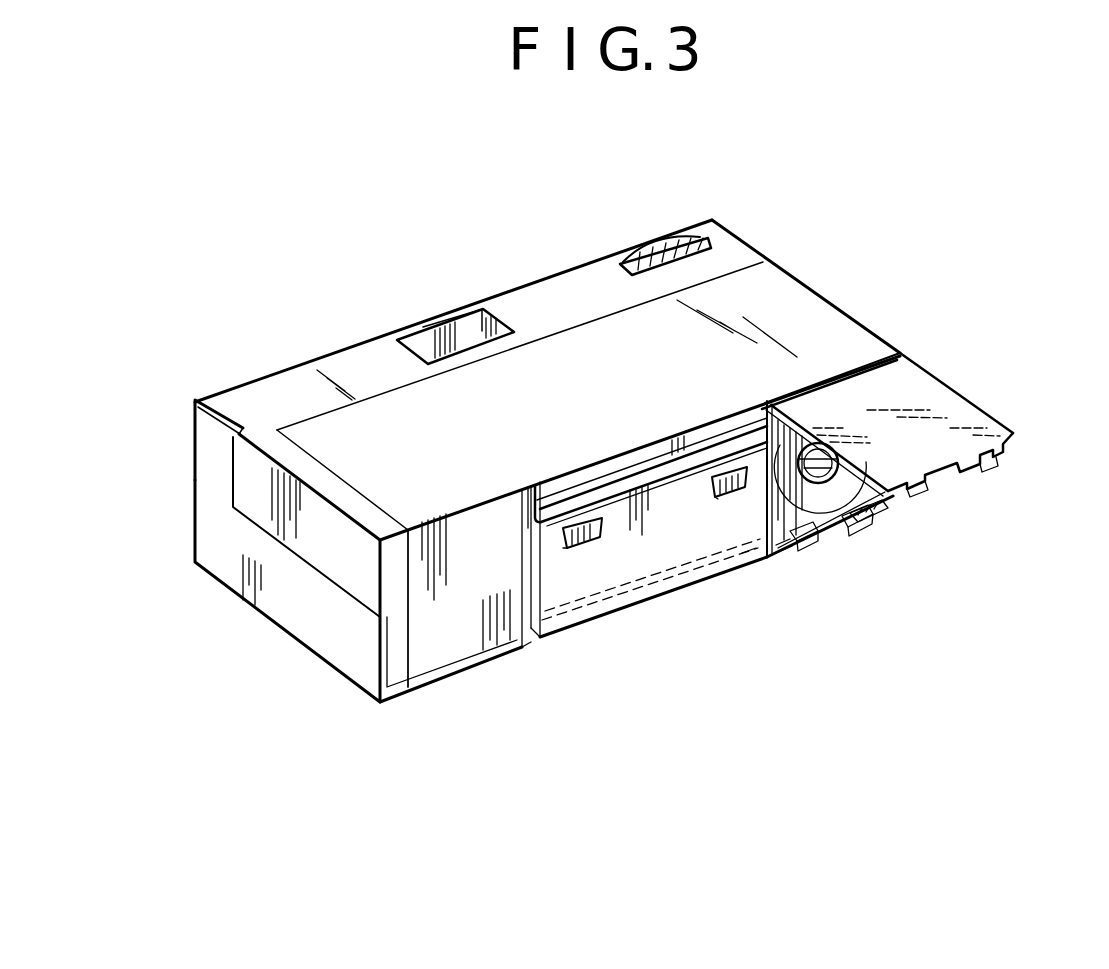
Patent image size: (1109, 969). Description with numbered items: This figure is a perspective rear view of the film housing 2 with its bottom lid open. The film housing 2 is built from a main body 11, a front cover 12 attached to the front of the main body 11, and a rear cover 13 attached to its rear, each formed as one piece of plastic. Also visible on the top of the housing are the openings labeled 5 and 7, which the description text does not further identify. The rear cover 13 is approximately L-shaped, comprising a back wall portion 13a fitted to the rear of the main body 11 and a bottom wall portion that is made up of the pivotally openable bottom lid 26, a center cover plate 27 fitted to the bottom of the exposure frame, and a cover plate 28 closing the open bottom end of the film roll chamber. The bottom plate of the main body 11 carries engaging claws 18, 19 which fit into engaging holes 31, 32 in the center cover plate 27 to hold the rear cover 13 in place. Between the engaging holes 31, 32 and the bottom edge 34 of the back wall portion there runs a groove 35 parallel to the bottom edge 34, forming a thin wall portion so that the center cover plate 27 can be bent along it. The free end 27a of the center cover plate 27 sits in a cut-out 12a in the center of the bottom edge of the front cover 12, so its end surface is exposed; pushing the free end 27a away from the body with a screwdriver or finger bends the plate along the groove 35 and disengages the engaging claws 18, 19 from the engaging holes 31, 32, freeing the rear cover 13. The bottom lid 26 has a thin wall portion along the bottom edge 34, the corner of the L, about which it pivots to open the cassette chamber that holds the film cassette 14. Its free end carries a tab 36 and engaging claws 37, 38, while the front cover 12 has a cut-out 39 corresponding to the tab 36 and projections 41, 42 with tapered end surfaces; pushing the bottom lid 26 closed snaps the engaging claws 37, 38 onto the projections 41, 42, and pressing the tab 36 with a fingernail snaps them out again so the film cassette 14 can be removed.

The film housing 2 is at (180, 397).
The grip recess 5 is at (655, 245).
The opening 7 is at (420, 343).
The main body 11 is at (282, 368).
The front cover 12 is at (284, 640).
The cut-out 12a is at (749, 552).
The rear cover 13 is at (776, 295).
The back wall portion 13a is at (556, 370).
The film cassette 14 is at (810, 413).
The engaging claw 18 is at (575, 522).
The engaging claw 19 is at (725, 475).
The bottom lid 26 is at (968, 432).
The center cover plate 27 is at (608, 585).
The free end 27a is at (677, 582).
The cover plate 28 is at (465, 648).
The engaging hole 31 is at (575, 552).
The engaging hole 32 is at (745, 500).
The bottom edge 34 is at (857, 370).
The groove 35 is at (640, 482).
The tab 36 is at (960, 470).
The engaging claw 37 is at (922, 490).
The engaging claw 38 is at (1000, 470).
The cut-out 39 is at (832, 535).
The projection 41 is at (805, 548).
The projection 42 is at (868, 520).